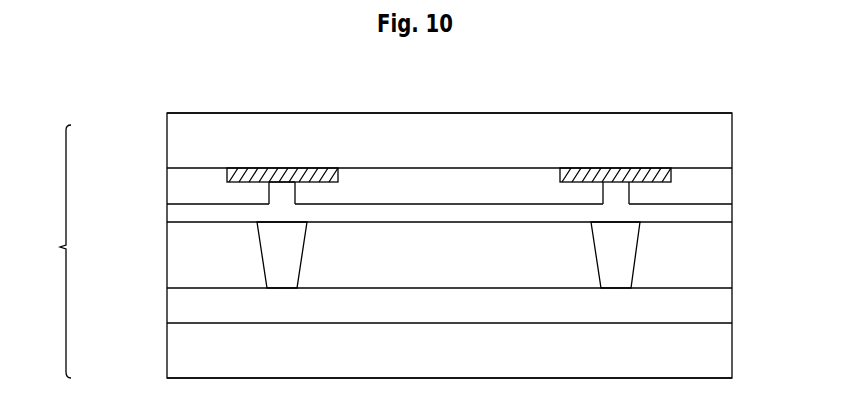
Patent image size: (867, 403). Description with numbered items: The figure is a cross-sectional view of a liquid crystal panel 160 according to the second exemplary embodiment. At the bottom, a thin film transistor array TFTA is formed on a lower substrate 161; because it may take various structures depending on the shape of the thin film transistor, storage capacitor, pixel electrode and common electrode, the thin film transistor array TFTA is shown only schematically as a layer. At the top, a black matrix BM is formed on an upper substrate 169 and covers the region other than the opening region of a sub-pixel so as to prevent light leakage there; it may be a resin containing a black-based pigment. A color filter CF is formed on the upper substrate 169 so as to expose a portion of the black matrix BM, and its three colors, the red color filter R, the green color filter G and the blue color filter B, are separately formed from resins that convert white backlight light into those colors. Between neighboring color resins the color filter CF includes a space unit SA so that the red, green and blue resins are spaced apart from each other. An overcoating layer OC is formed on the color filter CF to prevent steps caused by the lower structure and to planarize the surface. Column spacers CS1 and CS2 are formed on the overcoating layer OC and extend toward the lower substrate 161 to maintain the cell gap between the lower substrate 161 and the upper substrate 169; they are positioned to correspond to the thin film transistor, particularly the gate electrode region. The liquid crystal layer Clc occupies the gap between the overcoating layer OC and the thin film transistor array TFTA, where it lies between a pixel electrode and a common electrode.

The liquid crystal panel 160 is at (44, 251).
The upper substrate 169 is at (170, 141).
The lower substrate 161 is at (172, 355).
The color filter CF is at (724, 188).
The black matrix BM is at (625, 170).
The space unit SA is at (283, 192).
The overcoating layer OC is at (167, 211).
The liquid crystal layer Clc is at (725, 262).
The column spacer CS1 is at (270, 248).
The column spacer CS2 is at (631, 253).
The thin film transistor array TFTA is at (172, 305).
The red color filter R is at (195, 192).
The green color filter G is at (453, 191).
The blue color filter B is at (701, 190).